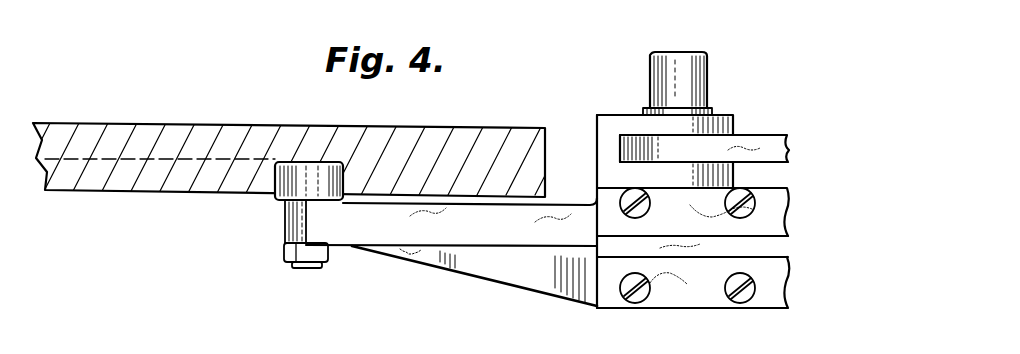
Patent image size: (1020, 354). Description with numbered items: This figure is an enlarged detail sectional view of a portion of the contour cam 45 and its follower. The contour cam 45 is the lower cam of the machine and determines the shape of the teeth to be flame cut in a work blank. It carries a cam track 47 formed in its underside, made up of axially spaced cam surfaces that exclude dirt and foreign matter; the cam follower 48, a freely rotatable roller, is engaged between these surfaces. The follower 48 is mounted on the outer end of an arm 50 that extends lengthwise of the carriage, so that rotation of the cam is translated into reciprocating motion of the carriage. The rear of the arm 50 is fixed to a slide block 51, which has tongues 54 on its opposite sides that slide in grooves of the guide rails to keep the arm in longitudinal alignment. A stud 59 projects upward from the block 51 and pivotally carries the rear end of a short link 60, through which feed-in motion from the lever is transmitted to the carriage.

The contour cam 45 is at (403, 132).
The cam track 47 is at (338, 170).
The cam follower 48 is at (277, 196).
The arm 50 is at (459, 233).
The slide block 51 is at (762, 300).
The tongues 54 is at (703, 252).
The stud 59 is at (650, 76).
The link 60 is at (766, 138).